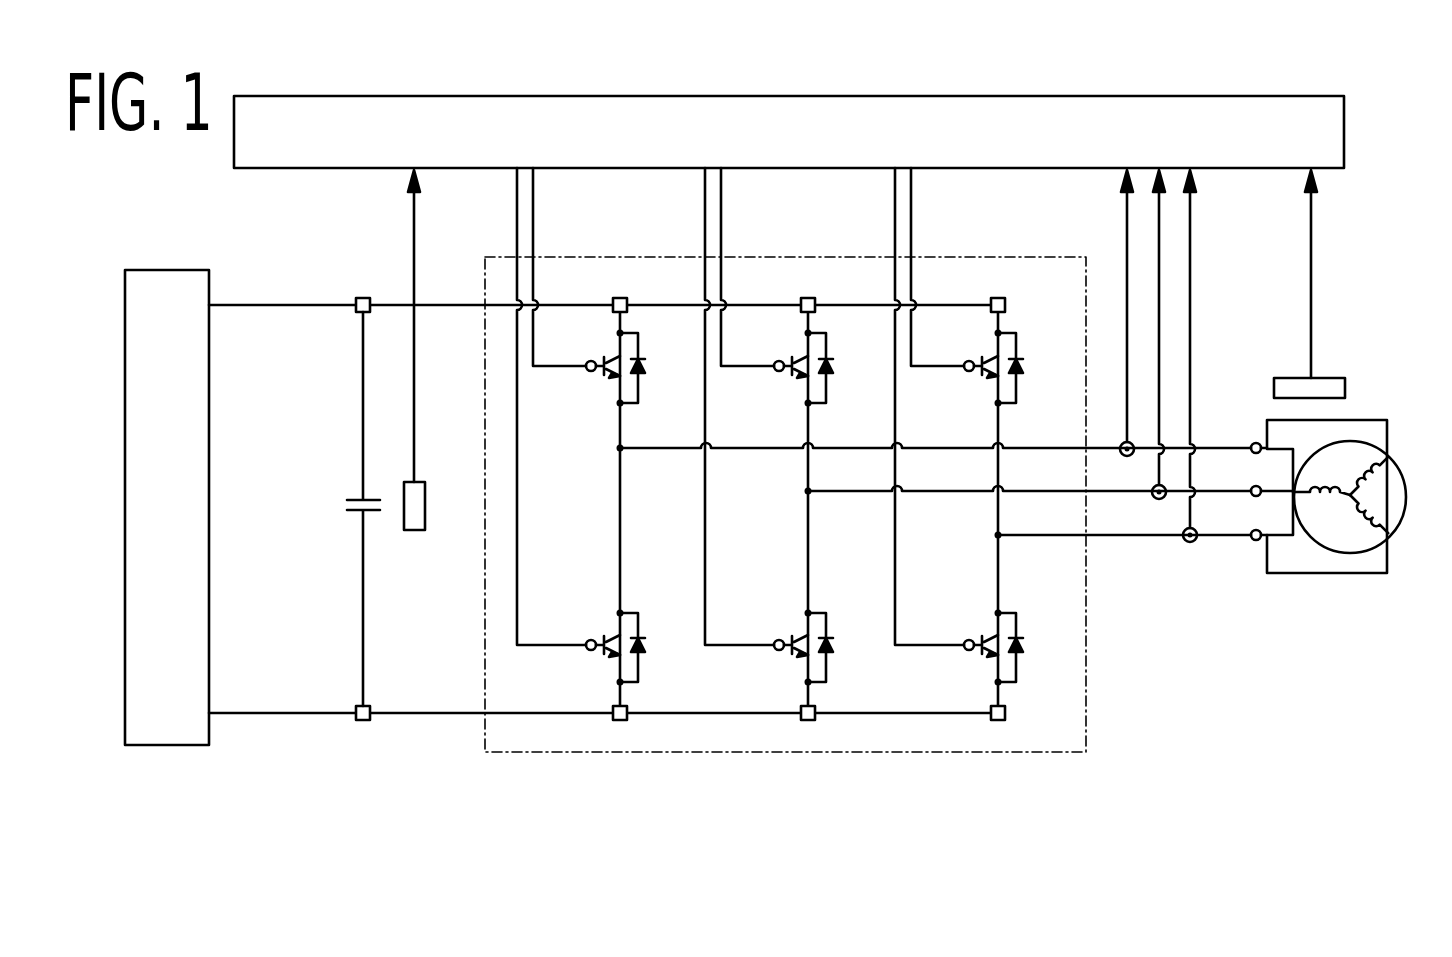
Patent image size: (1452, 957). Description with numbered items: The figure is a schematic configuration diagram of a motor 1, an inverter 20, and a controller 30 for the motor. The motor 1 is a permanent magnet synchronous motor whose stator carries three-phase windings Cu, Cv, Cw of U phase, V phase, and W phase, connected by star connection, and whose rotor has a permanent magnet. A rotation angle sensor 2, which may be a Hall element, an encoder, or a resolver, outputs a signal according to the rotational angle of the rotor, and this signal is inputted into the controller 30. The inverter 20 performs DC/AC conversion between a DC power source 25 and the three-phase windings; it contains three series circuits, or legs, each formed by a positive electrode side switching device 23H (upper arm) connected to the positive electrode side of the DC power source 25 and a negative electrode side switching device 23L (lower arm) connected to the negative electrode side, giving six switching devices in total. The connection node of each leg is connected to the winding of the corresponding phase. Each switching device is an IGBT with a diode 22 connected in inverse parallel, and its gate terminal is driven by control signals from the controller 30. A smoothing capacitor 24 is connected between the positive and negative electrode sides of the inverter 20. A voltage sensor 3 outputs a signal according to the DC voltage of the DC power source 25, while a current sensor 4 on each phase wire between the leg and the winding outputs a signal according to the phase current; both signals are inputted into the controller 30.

The motor 1 is at (1350, 531).
The rotation angle sensor 2 is at (1335, 377).
The voltage sensor 3 is at (427, 500).
The current sensor 4 is at (1131, 456).
The inverter 20 is at (598, 252).
The diode 22 is at (644, 362).
The positive electrode side switching device 23H is at (587, 361).
The negative electrode side switching device 23L is at (590, 639).
The smoothing capacitor 24 is at (368, 497).
The DC power source 25 is at (185, 543).
The controller 30 is at (761, 146).
The U phase winding Cu is at (1383, 478).
The V phase winding Cv is at (1320, 482).
The W phase winding Cw is at (1368, 524).